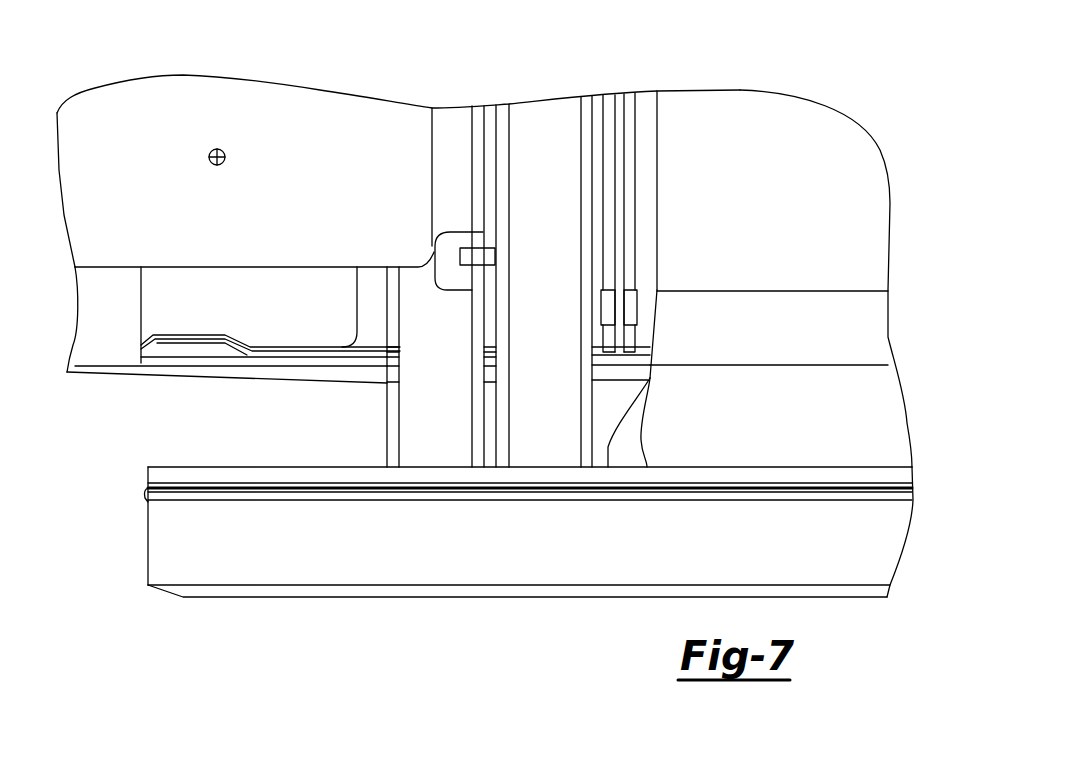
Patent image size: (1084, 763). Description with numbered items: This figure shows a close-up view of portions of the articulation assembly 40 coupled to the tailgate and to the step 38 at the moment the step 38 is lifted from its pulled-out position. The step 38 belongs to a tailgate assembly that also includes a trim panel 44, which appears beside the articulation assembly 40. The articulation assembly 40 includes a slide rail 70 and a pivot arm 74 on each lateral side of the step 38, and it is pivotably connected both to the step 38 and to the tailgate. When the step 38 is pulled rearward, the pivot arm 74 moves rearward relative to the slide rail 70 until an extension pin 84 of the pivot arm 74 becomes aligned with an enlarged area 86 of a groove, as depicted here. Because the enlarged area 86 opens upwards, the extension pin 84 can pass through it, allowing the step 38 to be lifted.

The step 38 is at (853, 222).
The articulation assembly 40 is at (438, 430).
The trim panel 44 is at (207, 90).
The slide rail 70 is at (448, 150).
The pivot arm 74 is at (560, 135).
The extension pin 84 is at (480, 250).
The enlarged area 86 is at (438, 257).